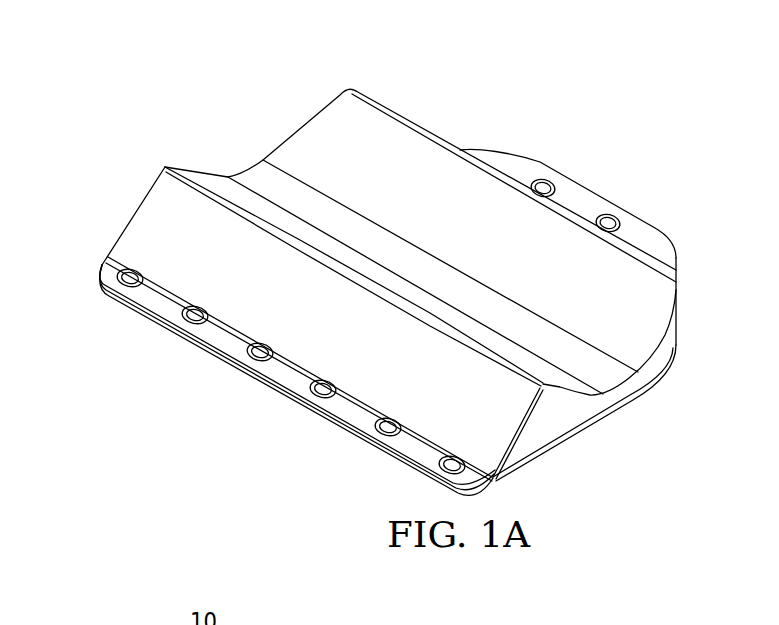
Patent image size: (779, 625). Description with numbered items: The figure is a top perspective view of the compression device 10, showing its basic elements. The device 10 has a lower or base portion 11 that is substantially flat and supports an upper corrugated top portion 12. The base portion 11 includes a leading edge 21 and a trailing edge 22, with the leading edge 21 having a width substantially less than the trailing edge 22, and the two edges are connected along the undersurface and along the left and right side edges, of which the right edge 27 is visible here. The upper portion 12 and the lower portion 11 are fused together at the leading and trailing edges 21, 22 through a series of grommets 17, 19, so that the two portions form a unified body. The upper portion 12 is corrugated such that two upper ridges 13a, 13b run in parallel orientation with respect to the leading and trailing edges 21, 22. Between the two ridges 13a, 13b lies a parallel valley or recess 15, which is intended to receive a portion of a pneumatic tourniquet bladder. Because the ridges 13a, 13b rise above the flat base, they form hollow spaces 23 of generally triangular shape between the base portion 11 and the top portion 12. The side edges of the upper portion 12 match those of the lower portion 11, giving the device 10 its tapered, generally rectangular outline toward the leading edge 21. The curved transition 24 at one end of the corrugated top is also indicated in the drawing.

The compression device 10 is at (639, 77).
The lower or base portion 11 is at (290, 405).
The upper corrugated top portion 12 is at (393, 95).
The upper ridge 13a is at (436, 133).
The upper ridge 13b is at (480, 352).
The valley or recess 15 is at (224, 133).
The grommets 17 is at (196, 306).
The grommets 19 is at (543, 180).
The leading edge 21 is at (647, 223).
The trailing edge 22 is at (240, 374).
The hollow spaces 23 is at (682, 346).
The curved transition of wall 24 is at (303, 120).
The right edge 27 is at (637, 413).